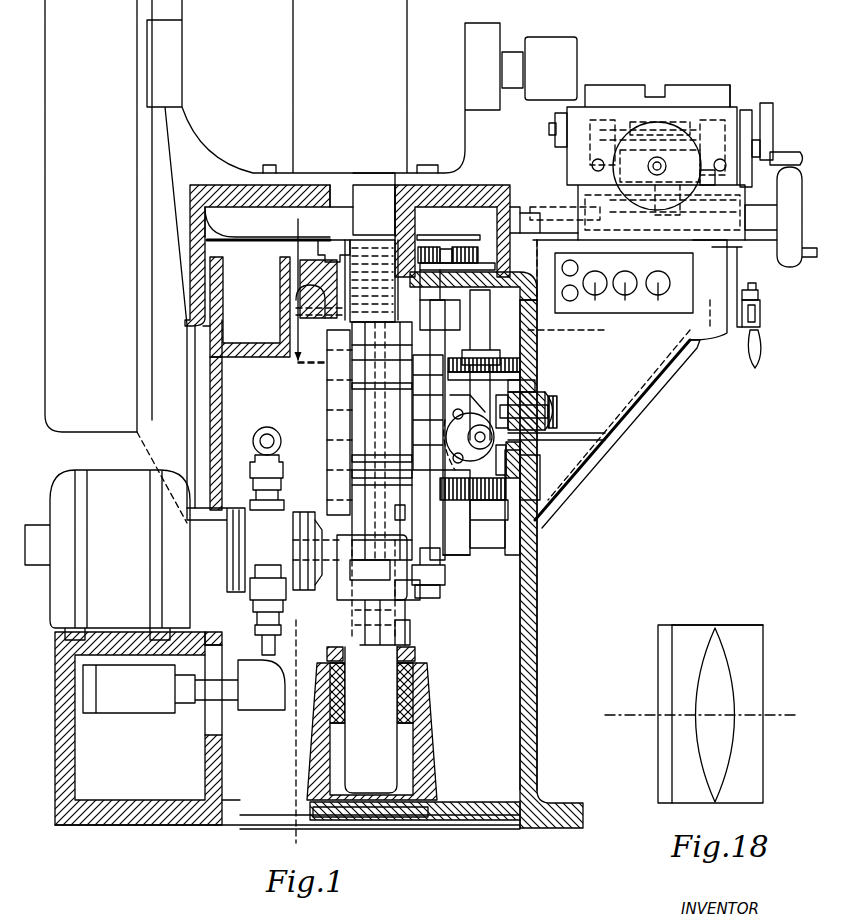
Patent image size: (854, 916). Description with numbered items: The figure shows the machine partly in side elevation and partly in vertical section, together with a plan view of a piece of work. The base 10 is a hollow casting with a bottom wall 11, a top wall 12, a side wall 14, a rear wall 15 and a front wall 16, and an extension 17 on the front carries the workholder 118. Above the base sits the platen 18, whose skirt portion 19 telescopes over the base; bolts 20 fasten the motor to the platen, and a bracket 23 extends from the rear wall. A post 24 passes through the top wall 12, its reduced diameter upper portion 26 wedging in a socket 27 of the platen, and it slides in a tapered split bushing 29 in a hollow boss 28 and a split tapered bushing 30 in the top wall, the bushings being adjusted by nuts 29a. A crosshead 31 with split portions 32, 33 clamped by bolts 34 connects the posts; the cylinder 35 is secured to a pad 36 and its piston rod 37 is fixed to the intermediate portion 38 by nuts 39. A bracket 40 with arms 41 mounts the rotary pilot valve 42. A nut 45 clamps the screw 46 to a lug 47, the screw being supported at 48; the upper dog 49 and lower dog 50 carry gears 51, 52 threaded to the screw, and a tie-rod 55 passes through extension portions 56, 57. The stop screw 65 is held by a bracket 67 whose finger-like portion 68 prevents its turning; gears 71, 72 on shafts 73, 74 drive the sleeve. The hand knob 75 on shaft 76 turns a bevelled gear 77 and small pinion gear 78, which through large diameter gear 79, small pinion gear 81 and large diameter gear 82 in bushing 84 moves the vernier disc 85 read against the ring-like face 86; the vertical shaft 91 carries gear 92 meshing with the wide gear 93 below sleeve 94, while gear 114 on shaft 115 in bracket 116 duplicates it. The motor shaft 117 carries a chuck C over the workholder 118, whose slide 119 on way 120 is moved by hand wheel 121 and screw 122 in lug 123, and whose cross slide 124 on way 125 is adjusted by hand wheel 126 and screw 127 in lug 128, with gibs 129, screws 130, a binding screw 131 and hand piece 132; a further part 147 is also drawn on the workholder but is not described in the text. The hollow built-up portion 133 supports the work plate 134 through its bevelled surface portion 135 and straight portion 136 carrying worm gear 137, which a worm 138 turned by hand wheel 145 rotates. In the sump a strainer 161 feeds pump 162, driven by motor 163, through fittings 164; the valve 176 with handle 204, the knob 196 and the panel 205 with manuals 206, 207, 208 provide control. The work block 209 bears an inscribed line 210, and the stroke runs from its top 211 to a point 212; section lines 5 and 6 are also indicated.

In FIG. 1, the base 10 is at (540, 626).
In FIG. 1, the bottom wall 11 is at (487, 812).
In FIG. 1, the top wall 12 is at (298, 279).
In FIG. 1, the side wall 14 is at (503, 545).
In FIG. 1, the rear wall 15 is at (210, 435).
In FIG. 1, the front wall 16 is at (537, 653).
In FIG. 1, the extension 17 is at (636, 413).
In FIG. 1, the platen 18 is at (478, 180).
In FIG. 1, the skirt portion 19 is at (192, 232).
In FIG. 18, the skirt portion 19 is at (610, 717).
In FIG. 1, the bolts 20 is at (268, 164).
In FIG. 1, the bracket 23 is at (160, 347).
In FIG. 1, the post 24 is at (385, 760).
In FIG. 1, the reduced diameter upper portion 26 is at (348, 240).
In FIG. 1, the socket 27 is at (380, 200).
In FIG. 1, the hollow boss 28 is at (425, 750).
In FIG. 1, the tapered split bushing 29 is at (405, 693).
In FIG. 1, the nuts 29a is at (418, 656).
In FIG. 1, the split tapered bushing 30 is at (338, 298).
In FIG. 1, the crosshead 31 is at (408, 613).
In FIG. 1, the split portion 32 is at (415, 601).
In FIG. 1, the split portion 33 is at (335, 598).
In FIG. 1, the bolts 34 is at (318, 548).
In FIG. 1, the cylinder 35 is at (326, 422).
In FIG. 1, the pad 36 is at (282, 312).
In FIG. 1, the piston rod 37 is at (318, 531).
In FIG. 1, the intermediate portion 38 is at (412, 633).
In FIG. 1, the nuts 39 is at (318, 567).
In FIG. 1, the bracket 40 is at (412, 413).
In FIG. 1, the arms 41 is at (468, 443).
In FIG. 1, the rotary pilot valve 42 is at (545, 451).
In FIG. 1, the nut 45 is at (440, 582).
In FIG. 1, the screw 46 is at (455, 593).
In FIG. 1, the lug 47 is at (475, 574).
In FIG. 1, the upper end support 48 is at (446, 253).
In FIG. 1, the upper dog 49 is at (417, 420).
In FIG. 1, the lower dog 50 is at (413, 474).
In FIG. 1, the gear 51 is at (400, 386).
In FIG. 1, the gear 52 is at (398, 518).
In FIG. 1, the tie-rod 55 is at (410, 461).
In FIG. 1, the extension portion 56 is at (400, 397).
In FIG. 1, the extension portion 57 is at (410, 482).
In FIG. 1, the adjustable stop screw 65 is at (373, 240).
In FIG. 1, the bracket 67 is at (337, 243).
In FIG. 1, the finger-like portion 68 is at (360, 192).
In FIG. 1, the gear 71 is at (430, 250).
In FIG. 1, the gear 72 is at (495, 248).
In FIG. 1, the shaft 73 is at (424, 245).
In FIG. 1, the shaft 74 is at (472, 248).
In FIG. 1, the hand knob 75 is at (557, 407).
In FIG. 1, the shaft 76 is at (557, 418).
In FIG. 1, the bevelled gear 77 is at (528, 393).
In FIG. 1, the small pinion gear 78 is at (531, 399).
In FIG. 1, the large diameter gear 79 is at (520, 500).
In FIG. 1, the small pinion gear 81 is at (560, 479).
In FIG. 1, the large diameter gear 82 is at (525, 386).
In FIG. 1, the bushing 84 is at (600, 437).
In FIG. 1, the disc 85 is at (605, 443).
In FIG. 1, the ring-like face 86 is at (575, 391).
In FIG. 1, the vertical shaft 91 is at (488, 338).
In FIG. 1, the gear 92 is at (522, 351).
In FIG. 1, the gear 93 is at (438, 346).
In FIG. 1, the sleeve 94 is at (438, 333).
In FIG. 1, the gear 114 is at (515, 500).
In FIG. 1, the shaft 115 is at (468, 558).
In FIG. 1, the bracket 116 is at (505, 546).
In FIG. 1, the motor shaft 117 is at (513, 52).
In FIG. 1, the workholder 118 is at (723, 72).
In FIG. 1, the slide 119 is at (577, 195).
In FIG. 1, the way 120 is at (515, 203).
In FIG. 1, the hand wheel 121 is at (781, 217).
In FIG. 1, the screw 122 is at (530, 210).
In FIG. 1, the lug 123 is at (637, 238).
In FIG. 1, the cross slide 124 is at (600, 110).
In FIG. 1, the way 125 is at (550, 135).
In FIG. 1, the hand wheel 126 is at (662, 124).
In FIG. 1, the screw 127 is at (665, 163).
In FIG. 1, the lug 128 is at (660, 166).
In FIG. 1, the gibs 129 is at (583, 190).
In FIG. 1, the screws 130 is at (738, 105).
In FIG. 1, the screw 131 is at (750, 162).
In FIG. 1, the hand piece 132 is at (768, 136).
In FIG. 1, the hollow built-up portion 133 is at (622, 120).
In FIG. 1, the work plate 134 is at (722, 86).
In FIG. 1, the bevelled surface portion 135 is at (642, 124).
In FIG. 1, the straight portion 136 is at (668, 124).
In FIG. 1, the worm gear 137 is at (690, 126).
In FIG. 1, the worm 138 is at (705, 115).
In FIG. 1, the hand wheel 145 is at (770, 108).
In FIG. 1, the terminal 147 is at (562, 117).
In FIG. 1, the strainer 161 is at (135, 705).
In FIG. 1, the pump 162 is at (288, 522).
In FIG. 1, the electric motor 163 is at (100, 478).
In FIG. 1, the fittings 164 is at (265, 425).
In FIG. 1, the flow control and check valve 176 is at (762, 327).
In FIG. 1, the knob 196 is at (757, 296).
In FIG. 1, the handle 204 is at (755, 370).
In FIG. 1, the panel 205 is at (712, 336).
In FIG. 1, the manual 206 is at (590, 305).
In FIG. 1, the manual 207 is at (626, 298).
In FIG. 1, the manual 208 is at (672, 318).
In FIG. 18, the block 209 is at (739, 618).
In FIG. 18, the line 210 is at (740, 663).
In FIG. 18, the top 211 is at (688, 633).
In FIG. 18, the point 212 is at (662, 678).
In FIG. 1, the chuck C is at (555, 42).
In FIG. 1, the section line 5 is at (298, 362).
In FIG. 1, the section line 6 is at (297, 219).